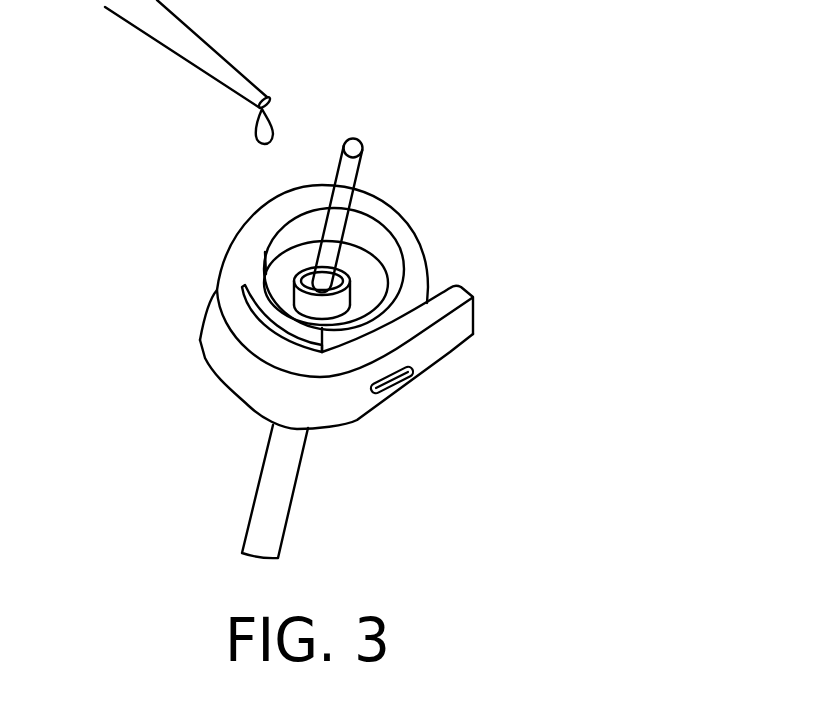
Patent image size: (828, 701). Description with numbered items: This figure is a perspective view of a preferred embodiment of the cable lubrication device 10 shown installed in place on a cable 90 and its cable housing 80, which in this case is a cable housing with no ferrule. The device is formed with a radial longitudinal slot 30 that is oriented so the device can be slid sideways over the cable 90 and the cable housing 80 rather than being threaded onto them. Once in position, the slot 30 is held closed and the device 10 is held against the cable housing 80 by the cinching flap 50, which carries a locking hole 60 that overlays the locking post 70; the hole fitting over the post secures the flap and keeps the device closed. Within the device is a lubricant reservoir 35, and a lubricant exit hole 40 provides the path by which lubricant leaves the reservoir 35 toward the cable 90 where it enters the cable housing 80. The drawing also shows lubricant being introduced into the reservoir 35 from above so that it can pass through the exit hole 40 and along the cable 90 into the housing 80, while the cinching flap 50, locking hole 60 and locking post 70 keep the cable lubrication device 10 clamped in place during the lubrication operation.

The cable lubrication device 10 is at (388, 187).
The radial longitudinal slot 30 is at (322, 333).
The lubricant reservoir 35 is at (283, 267).
The lubricant exit hole 40 is at (350, 278).
The cinching flap 50 is at (468, 345).
The locking hole 60 is at (400, 393).
The locking post 70 is at (402, 385).
The cable housing with no ferrule 80 is at (290, 523).
The cable 90 is at (363, 170).